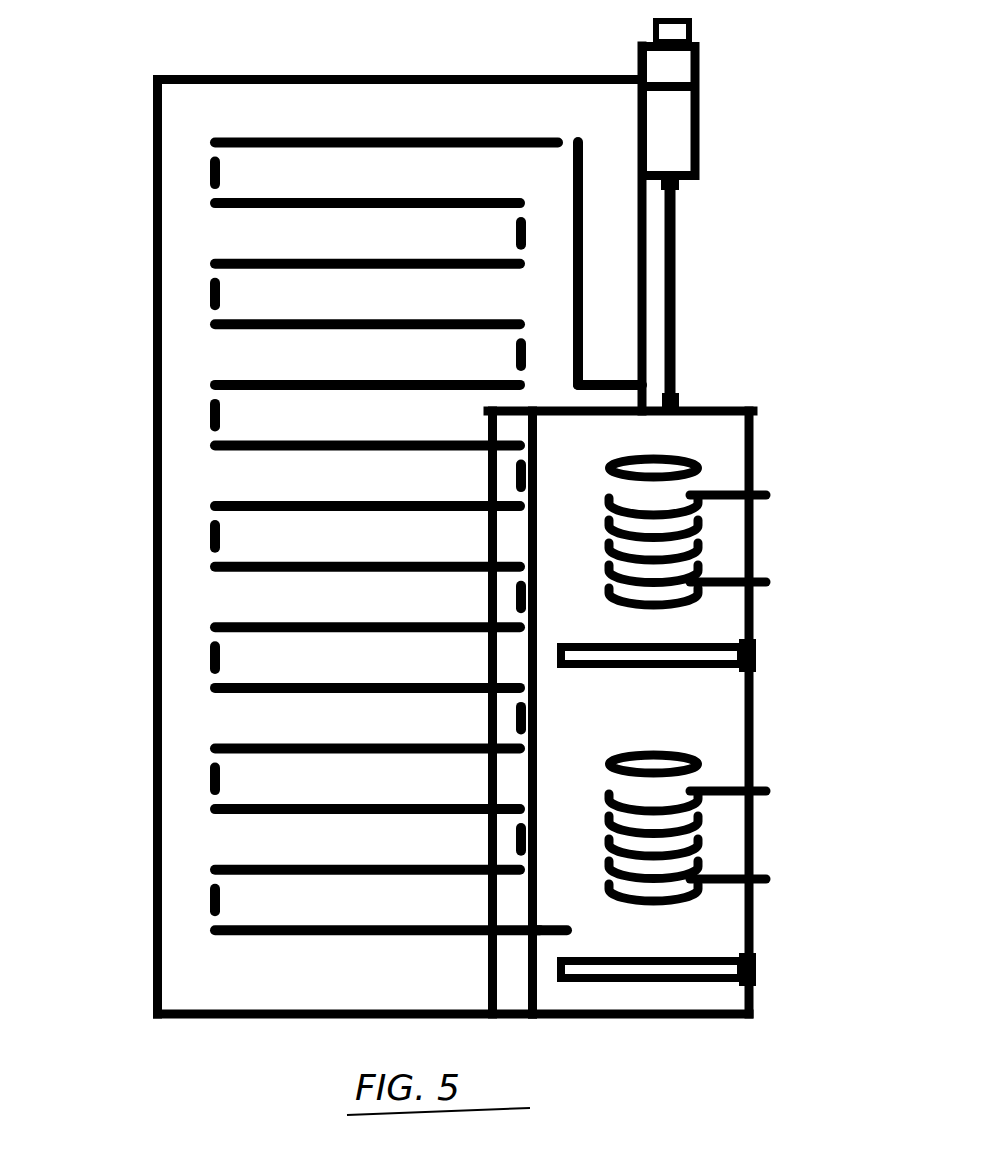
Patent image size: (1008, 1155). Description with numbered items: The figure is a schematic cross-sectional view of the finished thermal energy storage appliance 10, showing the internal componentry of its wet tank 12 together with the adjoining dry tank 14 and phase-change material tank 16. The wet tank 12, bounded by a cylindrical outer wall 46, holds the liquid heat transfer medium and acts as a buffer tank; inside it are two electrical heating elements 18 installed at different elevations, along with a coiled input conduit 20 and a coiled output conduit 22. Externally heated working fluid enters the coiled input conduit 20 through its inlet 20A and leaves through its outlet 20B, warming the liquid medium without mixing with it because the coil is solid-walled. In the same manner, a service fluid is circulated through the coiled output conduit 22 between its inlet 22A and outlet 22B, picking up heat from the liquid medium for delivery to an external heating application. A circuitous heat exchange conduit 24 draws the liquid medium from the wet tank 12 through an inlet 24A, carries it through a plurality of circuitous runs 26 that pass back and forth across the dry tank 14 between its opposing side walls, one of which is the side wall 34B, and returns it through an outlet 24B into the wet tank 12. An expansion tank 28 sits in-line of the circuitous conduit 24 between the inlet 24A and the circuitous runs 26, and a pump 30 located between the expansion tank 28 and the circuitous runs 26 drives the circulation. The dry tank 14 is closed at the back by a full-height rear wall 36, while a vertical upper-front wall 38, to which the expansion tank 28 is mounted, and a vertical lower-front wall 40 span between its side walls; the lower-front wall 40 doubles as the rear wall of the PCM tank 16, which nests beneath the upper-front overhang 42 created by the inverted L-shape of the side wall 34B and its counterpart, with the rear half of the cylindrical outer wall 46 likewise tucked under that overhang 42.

The appliance 10 is at (88, 98).
The wet tank 12 is at (754, 745).
The dry tank 14 is at (372, 104).
The phase-change material tank 16 is at (513, 953).
The electrical heating element 18 is at (587, 645).
The coiled input conduit 20 is at (710, 831).
The inlet 20A is at (772, 788).
The outlet 20B is at (772, 880).
The coiled output conduit 22 is at (710, 537).
The inlet 22A is at (772, 585).
The outlet 22B is at (772, 492).
The circuitous heat exchange conduit 24 is at (683, 320).
The inlet 24A is at (680, 397).
The outlet 24B is at (580, 932).
The circuitous runs 26 is at (210, 568).
The expansion tank 28 is at (684, 82).
The pump 30 is at (736, 403).
The side wall 34B is at (373, 981).
The rear wall 36 is at (154, 375).
The upper-front wall 38 is at (646, 277).
The lower-front wall 40 is at (490, 710).
The upper-front overhang 42 is at (647, 242).
The cylindrical outer wall 46 is at (538, 527).